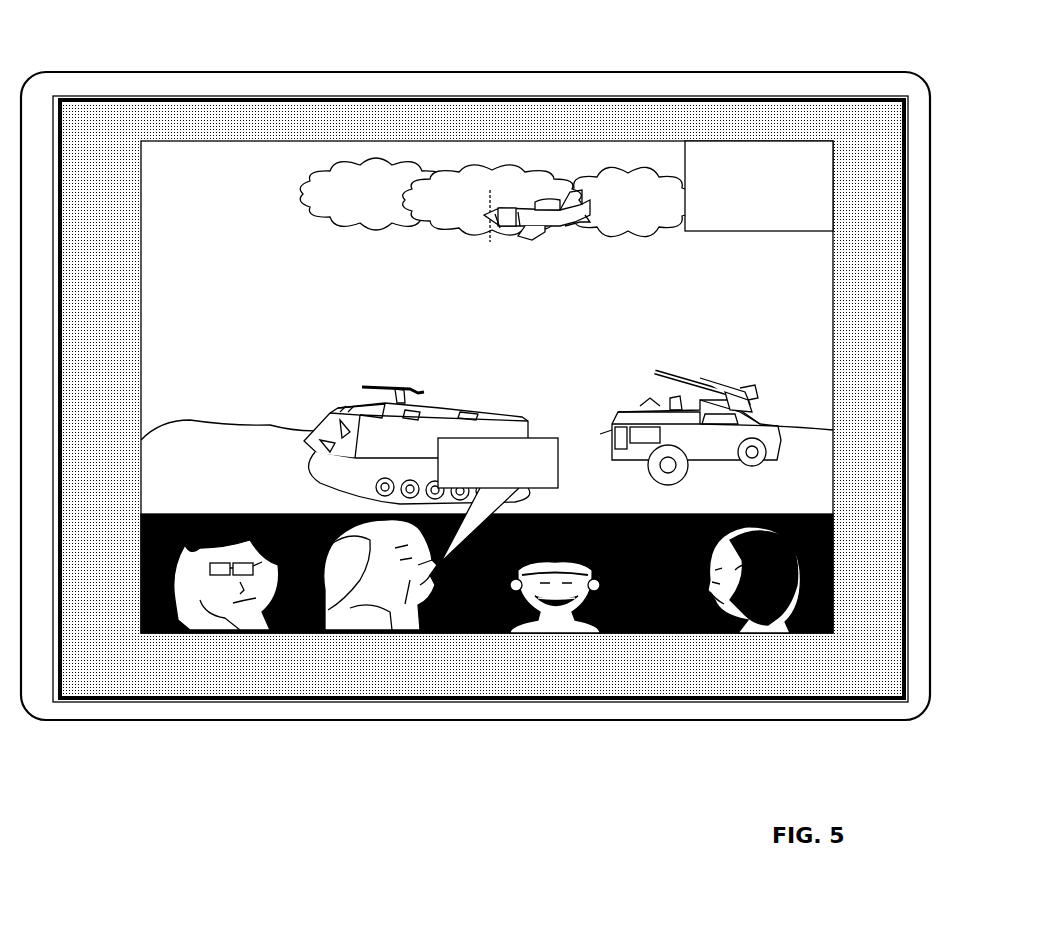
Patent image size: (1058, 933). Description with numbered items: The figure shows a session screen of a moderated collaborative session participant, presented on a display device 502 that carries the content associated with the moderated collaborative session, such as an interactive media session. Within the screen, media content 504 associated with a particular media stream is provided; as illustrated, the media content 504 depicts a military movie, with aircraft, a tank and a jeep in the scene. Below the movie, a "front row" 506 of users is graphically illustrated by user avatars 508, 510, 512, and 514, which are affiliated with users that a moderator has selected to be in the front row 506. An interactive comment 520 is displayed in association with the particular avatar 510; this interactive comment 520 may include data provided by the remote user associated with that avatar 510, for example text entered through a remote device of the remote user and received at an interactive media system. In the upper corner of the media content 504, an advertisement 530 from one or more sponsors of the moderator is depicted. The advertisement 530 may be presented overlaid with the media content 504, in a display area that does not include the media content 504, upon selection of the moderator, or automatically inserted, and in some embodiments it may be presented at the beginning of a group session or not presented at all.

The display device 502 is at (328, 71).
The media content 504 is at (257, 177).
The front row 506 is at (832, 568).
The user avatar 508 is at (172, 633).
The user avatar 510 is at (347, 633).
The user avatar 512 is at (530, 633).
The user avatar 514 is at (740, 633).
The interactive comment 520 is at (497, 438).
The advertisement 530 is at (752, 140).